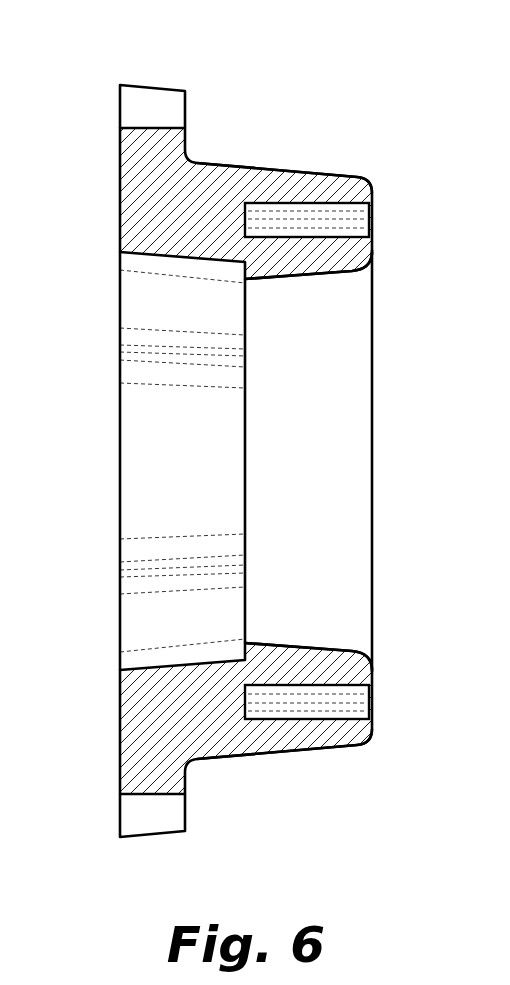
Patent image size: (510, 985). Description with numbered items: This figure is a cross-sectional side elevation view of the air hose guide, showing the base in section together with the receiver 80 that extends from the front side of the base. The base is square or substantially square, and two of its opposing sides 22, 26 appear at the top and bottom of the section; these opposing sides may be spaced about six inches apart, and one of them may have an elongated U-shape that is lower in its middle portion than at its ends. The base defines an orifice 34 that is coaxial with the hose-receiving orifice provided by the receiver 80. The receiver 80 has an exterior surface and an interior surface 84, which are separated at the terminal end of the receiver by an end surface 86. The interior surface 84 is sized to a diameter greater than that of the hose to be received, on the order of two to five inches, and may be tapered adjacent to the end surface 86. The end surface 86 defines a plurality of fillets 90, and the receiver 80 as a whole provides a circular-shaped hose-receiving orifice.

The receiver 80 is at (253, 460).
The side 22 is at (156, 88).
The side 26 is at (155, 839).
The orifice 34 is at (176, 261).
The interior surface 84 is at (306, 278).
The end surface 86 is at (282, 173).
The fillets 90 is at (337, 703).